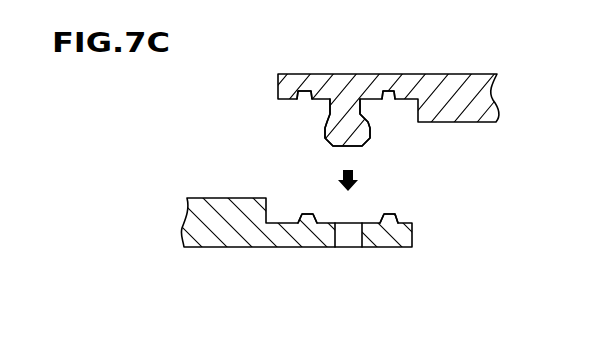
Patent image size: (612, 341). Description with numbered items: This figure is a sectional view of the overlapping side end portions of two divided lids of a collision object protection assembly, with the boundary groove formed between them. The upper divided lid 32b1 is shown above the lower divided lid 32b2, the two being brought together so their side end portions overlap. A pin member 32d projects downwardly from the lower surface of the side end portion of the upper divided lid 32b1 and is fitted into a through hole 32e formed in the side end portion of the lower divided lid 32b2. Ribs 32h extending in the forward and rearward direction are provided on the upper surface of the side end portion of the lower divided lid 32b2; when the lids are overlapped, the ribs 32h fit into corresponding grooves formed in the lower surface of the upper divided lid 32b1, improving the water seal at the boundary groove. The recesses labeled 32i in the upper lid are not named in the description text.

The upper divided lid 32b1 is at (477, 79).
The lower divided lid 32b2 is at (221, 242).
The recess / notch 32i is at (399, 98).
The pin member 32d is at (364, 136).
The ribs 32h is at (305, 213).
The through hole 32e is at (342, 246).